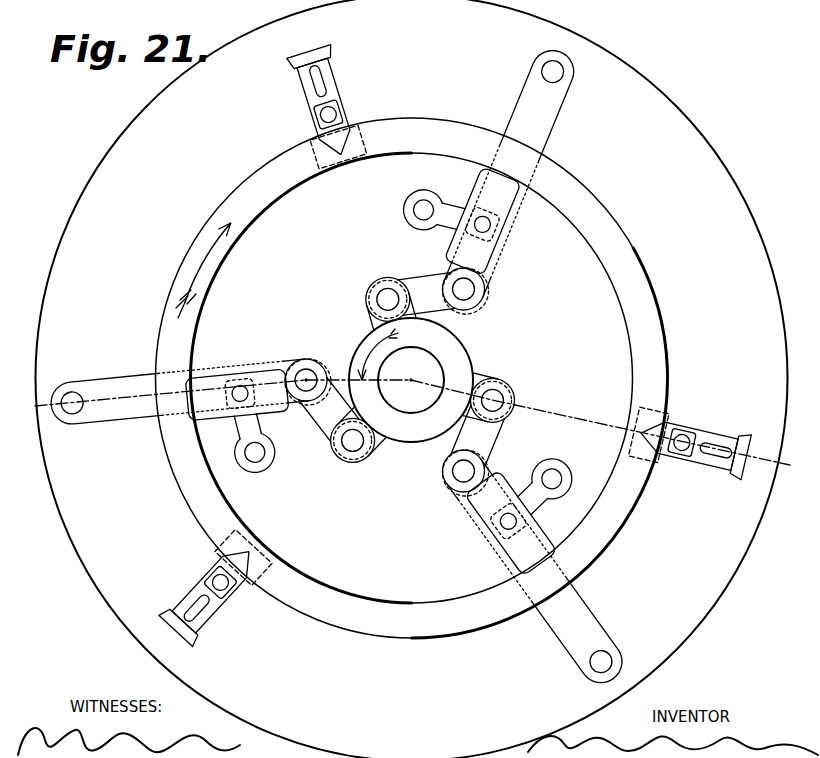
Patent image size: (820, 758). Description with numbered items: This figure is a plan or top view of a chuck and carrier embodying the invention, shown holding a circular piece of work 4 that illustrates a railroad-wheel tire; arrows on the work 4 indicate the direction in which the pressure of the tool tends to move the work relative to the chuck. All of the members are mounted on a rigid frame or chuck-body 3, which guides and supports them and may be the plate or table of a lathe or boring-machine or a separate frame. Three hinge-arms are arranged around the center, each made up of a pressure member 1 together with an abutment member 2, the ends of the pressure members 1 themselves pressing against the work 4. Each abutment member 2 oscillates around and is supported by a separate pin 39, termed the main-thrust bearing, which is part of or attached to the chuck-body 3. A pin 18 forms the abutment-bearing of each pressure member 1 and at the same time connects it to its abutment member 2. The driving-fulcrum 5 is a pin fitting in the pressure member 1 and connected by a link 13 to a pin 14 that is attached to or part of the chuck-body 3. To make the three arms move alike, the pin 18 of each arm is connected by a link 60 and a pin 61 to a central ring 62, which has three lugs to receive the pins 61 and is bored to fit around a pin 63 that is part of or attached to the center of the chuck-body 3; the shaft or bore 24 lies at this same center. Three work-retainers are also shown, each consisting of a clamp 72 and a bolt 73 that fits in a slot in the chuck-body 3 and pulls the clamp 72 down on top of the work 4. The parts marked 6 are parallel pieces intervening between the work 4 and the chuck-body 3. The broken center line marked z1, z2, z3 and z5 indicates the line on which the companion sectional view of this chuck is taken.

The pressure member 1 is at (371, 371).
The abutment member 2 is at (339, 367).
The chuck-body 3 is at (412, 379).
The work 4 is at (412, 378).
The driving-fulcrum 5 is at (456, 236).
The parallel piece 6 is at (360, 128).
The link 13 is at (390, 366).
The pin 14 is at (410, 214).
The pin 18 is at (486, 292).
The shaft 24 is at (410, 391).
The main-thrust bearing 39 is at (562, 72).
The link 60 is at (401, 370).
The pin 61 is at (366, 296).
The ring 62 is at (417, 374).
The pin 63 is at (411, 380).
The clamp 72 is at (335, 79).
The bolt 73 is at (316, 116).
The section line point z1 is at (153, 397).
The section line point z2 is at (287, 389).
The section line point z3 is at (325, 363).
The section line point z5 is at (612, 427).